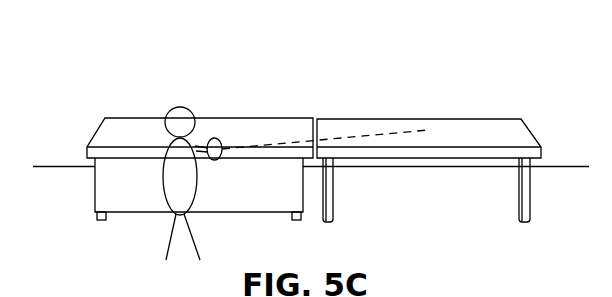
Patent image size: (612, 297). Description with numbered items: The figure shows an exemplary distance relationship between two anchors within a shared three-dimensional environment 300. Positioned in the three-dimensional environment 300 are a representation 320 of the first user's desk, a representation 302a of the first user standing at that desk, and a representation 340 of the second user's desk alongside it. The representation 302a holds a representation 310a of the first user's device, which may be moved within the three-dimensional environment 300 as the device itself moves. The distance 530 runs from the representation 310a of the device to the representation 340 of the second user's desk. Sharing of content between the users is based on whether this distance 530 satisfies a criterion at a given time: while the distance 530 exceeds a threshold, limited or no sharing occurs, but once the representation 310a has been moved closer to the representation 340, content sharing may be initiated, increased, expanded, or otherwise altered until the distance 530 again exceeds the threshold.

The 3D environment 300 is at (90, 80).
The representation of the first user 302a is at (190, 240).
The representation of device 310a is at (215, 146).
The representation of the first user's desk 320 is at (120, 213).
The representation of the second user's desk 340 is at (351, 118).
The distance 530 is at (382, 132).